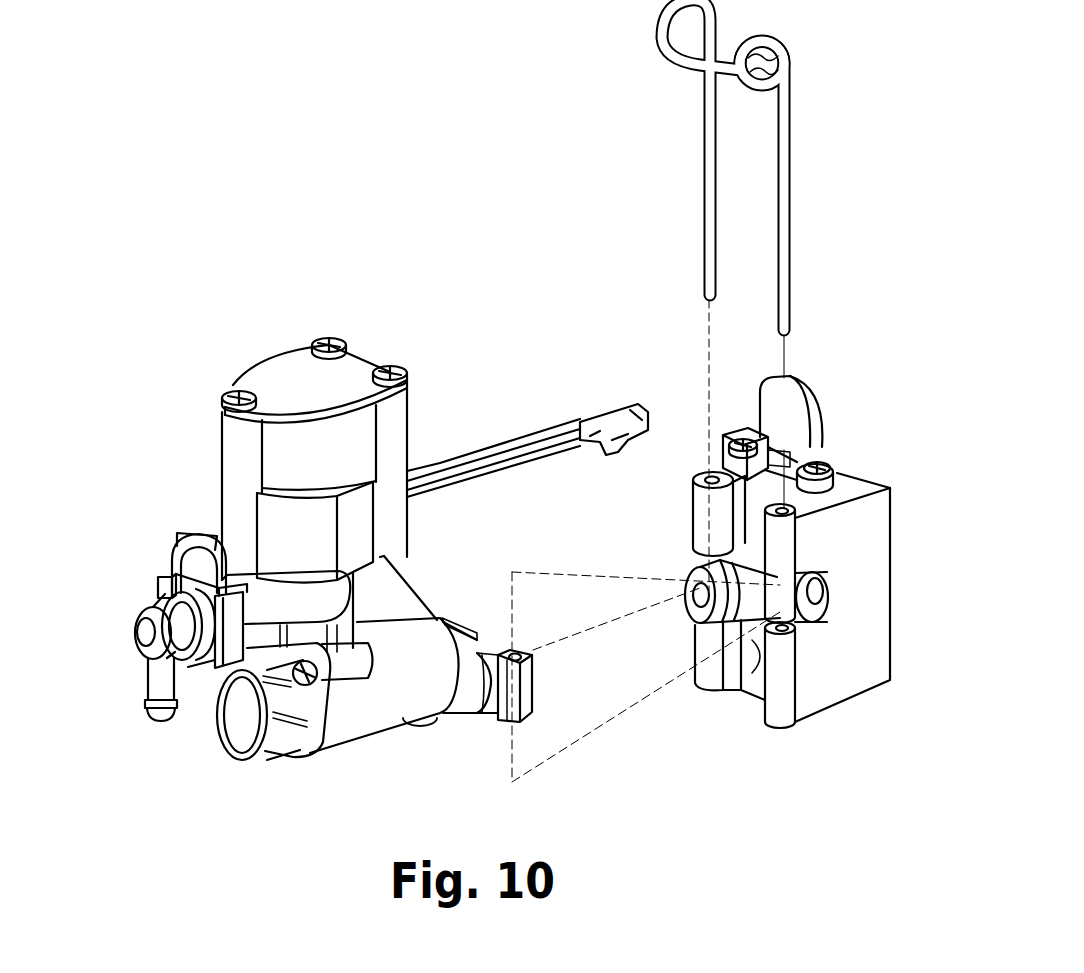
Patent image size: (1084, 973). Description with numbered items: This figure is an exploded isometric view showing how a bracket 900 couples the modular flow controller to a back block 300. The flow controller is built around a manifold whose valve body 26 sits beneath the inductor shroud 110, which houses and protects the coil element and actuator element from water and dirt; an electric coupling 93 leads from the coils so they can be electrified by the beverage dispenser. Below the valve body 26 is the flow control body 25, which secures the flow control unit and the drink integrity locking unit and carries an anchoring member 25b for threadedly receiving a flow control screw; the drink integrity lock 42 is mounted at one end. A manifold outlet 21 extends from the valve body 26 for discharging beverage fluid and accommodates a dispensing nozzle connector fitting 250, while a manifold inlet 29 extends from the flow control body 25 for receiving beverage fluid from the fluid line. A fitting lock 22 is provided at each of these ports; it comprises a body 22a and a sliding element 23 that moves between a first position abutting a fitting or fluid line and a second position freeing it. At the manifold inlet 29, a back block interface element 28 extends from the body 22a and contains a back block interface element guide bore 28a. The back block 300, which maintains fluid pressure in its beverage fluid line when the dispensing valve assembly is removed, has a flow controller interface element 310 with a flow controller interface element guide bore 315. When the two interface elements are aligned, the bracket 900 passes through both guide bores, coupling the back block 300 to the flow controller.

The bracket 900 is at (793, 163).
The back block 300 is at (866, 604).
The flow controller interface element 310 is at (776, 553).
The flow controller interface element guide bore 315 is at (826, 492).
The inductor shroud 110 is at (338, 466).
The valve body 26 is at (308, 549).
The manifold outlet 21 is at (281, 614).
The flow control body 25 is at (419, 677).
The anchoring member 25b is at (347, 668).
The drink integrity lock 42 is at (254, 732).
The manifold inlet 29 is at (455, 713).
The back block interface element 28 is at (500, 700).
The back block interface element guide bore 28a is at (516, 652).
The fitting lock 22 is at (152, 571).
The sliding element 23 is at (198, 534).
The dispensing nozzle connector fitting 250 is at (143, 652).
The body 22a is at (208, 665).
The electric coupling 93 is at (546, 441).